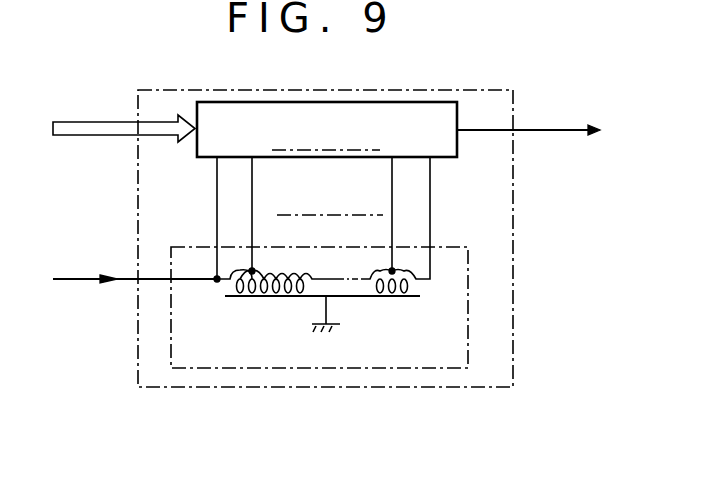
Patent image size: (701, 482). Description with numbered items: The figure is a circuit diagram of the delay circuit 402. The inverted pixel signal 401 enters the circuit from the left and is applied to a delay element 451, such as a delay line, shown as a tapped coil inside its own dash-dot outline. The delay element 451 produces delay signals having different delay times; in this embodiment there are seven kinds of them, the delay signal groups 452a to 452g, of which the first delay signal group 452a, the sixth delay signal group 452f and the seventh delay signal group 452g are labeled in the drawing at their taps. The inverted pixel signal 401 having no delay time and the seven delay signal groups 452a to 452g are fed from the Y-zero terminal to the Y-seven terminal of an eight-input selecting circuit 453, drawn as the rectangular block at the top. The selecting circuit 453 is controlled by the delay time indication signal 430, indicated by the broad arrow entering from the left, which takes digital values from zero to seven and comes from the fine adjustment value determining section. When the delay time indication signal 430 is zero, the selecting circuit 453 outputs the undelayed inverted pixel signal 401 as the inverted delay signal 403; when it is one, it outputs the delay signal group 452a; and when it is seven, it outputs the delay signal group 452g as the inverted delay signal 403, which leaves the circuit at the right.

The delay circuit 402 is at (513, 232).
The 8-input selecting circuit 453 is at (457, 158).
The delay time indication signal 430 is at (83, 118).
The inverted delay signal 403 is at (559, 128).
The inverted pixel signal 401 is at (73, 278).
The delay element 451 is at (180, 240).
The delay signal group 452a is at (252, 173).
The delay signal group 452f is at (392, 200).
The delay signal group 452g is at (430, 218).